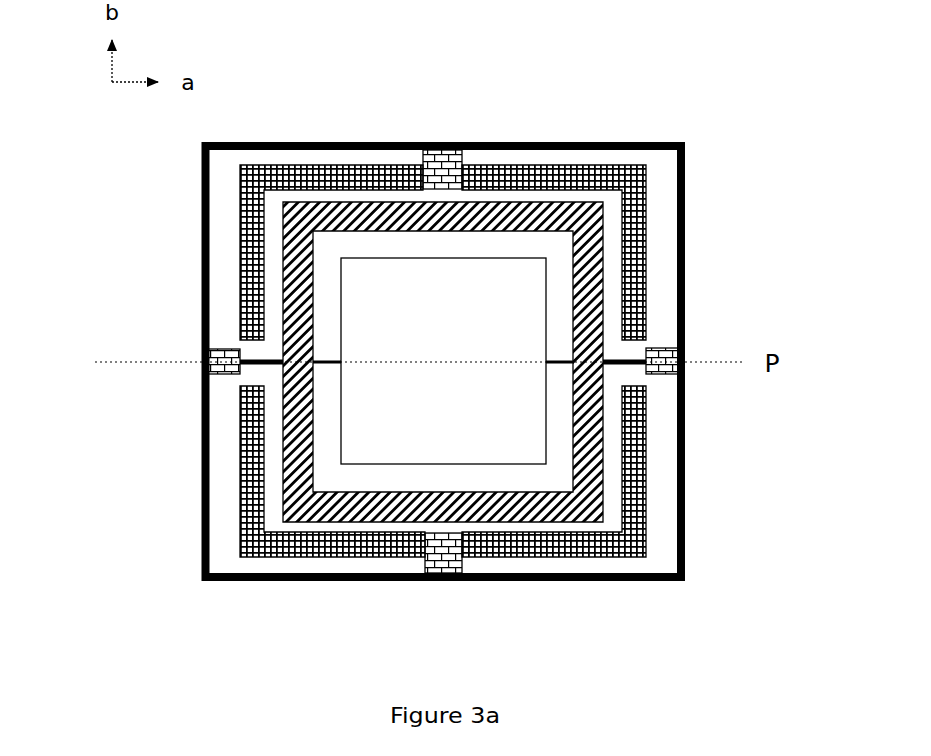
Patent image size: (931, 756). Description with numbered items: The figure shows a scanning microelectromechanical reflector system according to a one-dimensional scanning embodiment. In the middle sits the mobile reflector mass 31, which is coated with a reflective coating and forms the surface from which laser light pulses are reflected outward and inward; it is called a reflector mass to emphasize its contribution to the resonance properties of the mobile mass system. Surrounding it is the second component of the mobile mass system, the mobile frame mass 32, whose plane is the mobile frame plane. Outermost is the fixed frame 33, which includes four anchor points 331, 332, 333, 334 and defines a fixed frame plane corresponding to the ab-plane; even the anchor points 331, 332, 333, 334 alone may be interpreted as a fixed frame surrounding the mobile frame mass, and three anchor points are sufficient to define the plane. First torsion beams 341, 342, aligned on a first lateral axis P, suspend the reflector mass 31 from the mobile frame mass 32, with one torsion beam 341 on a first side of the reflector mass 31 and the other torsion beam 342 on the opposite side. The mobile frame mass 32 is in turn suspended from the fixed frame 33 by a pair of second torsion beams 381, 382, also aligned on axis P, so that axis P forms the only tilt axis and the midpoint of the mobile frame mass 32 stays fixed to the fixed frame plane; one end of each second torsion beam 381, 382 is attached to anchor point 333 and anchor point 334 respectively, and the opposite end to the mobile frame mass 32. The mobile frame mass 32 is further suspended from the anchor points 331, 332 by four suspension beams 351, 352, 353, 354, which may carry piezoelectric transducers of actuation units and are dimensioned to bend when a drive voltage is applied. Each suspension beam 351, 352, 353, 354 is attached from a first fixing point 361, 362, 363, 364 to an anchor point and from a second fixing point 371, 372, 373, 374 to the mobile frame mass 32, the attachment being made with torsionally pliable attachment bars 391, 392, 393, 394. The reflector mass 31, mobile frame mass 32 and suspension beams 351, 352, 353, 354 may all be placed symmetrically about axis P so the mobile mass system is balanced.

The mobile reflector mass 31 is at (466, 308).
The mobile frame mass 32 is at (580, 227).
The fixed frame 33 is at (355, 140).
The anchor point 331 is at (438, 563).
The anchor point 332 is at (437, 163).
The anchor point 333 is at (218, 360).
The anchor point 334 is at (665, 360).
The first torsion beam 341 is at (328, 363).
The first torsion beam 342 is at (550, 362).
The suspension beam 351 is at (247, 266).
The suspension beam 352 is at (252, 488).
The suspension beam 353 is at (630, 263).
The suspension beam 354 is at (632, 490).
The first fixing point 361 is at (422, 173).
The first fixing point 362 is at (420, 552).
The first fixing point 363 is at (463, 173).
The first fixing point 364 is at (465, 555).
The second fixing point 371 is at (313, 322).
The second fixing point 372 is at (313, 393).
The second fixing point 373 is at (597, 335).
The second fixing point 374 is at (590, 390).
The second torsion beam 381 is at (255, 368).
The second torsion beam 382 is at (632, 368).
The torsionally pliable attachment bar 391 is at (268, 334).
The torsionally pliable attachment bar 392 is at (270, 395).
The torsionally pliable attachment bar 393 is at (615, 330).
The torsionally pliable attachment bar 394 is at (615, 392).